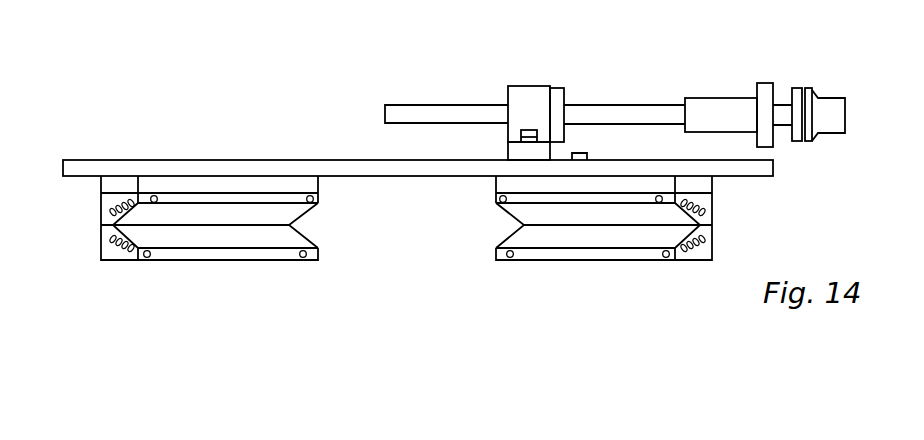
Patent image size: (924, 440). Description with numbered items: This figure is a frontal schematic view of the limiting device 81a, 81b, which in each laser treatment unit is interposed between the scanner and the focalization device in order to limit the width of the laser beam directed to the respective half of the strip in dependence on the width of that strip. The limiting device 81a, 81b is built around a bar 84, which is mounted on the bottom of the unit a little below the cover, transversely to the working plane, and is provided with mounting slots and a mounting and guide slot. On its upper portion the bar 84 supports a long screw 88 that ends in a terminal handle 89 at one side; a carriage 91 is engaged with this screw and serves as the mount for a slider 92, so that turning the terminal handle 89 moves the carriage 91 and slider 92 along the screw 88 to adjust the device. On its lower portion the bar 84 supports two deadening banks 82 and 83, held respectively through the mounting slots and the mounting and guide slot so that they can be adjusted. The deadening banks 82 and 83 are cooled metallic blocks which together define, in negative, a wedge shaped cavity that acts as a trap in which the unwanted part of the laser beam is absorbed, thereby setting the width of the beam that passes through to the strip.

The limiting device 81a is at (307, 95).
The limiting device 81b is at (454, 152).
The deadening bank 82 is at (168, 254).
The deadening bank 83 is at (559, 254).
The bar 84 is at (102, 170).
The long screw 88 is at (595, 110).
The terminal handle 89 is at (835, 125).
The carriage 91 is at (517, 98).
The slider 92 is at (515, 150).